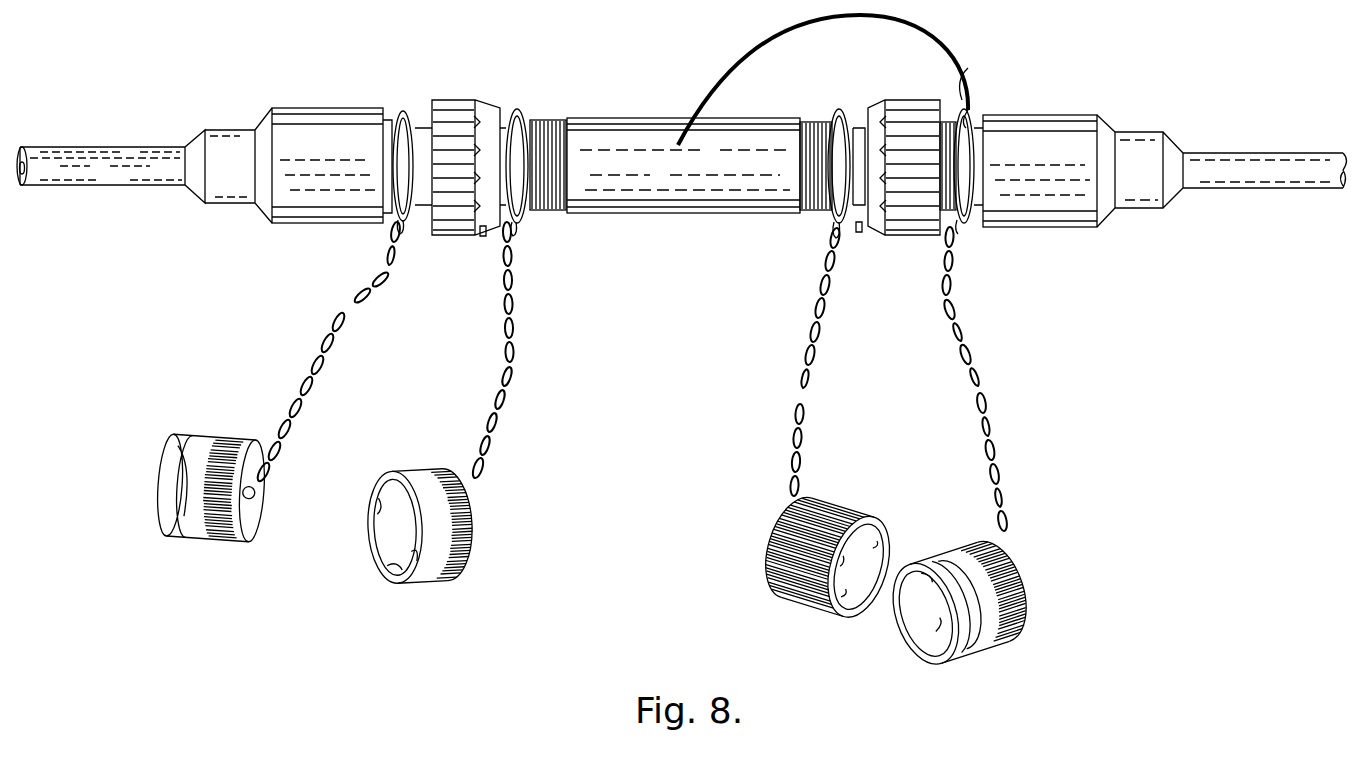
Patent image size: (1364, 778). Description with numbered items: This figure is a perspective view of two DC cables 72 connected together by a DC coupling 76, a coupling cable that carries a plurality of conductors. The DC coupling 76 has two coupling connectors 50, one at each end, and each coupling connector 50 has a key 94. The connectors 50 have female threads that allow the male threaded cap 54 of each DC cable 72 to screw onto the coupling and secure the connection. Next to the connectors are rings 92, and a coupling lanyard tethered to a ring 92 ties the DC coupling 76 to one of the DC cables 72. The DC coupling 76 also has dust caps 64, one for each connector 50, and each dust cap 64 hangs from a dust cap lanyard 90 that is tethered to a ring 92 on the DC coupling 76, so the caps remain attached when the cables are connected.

The coupling connector 50 is at (480, 232).
The male threaded cap 54 is at (490, 112).
The dust cap 64 is at (207, 533).
The DC cable 72 is at (334, 150).
The DC coupling 76 is at (650, 104).
The dust cap lanyard 90 is at (330, 323).
The ring 92 is at (518, 110).
The key 94 is at (405, 115).